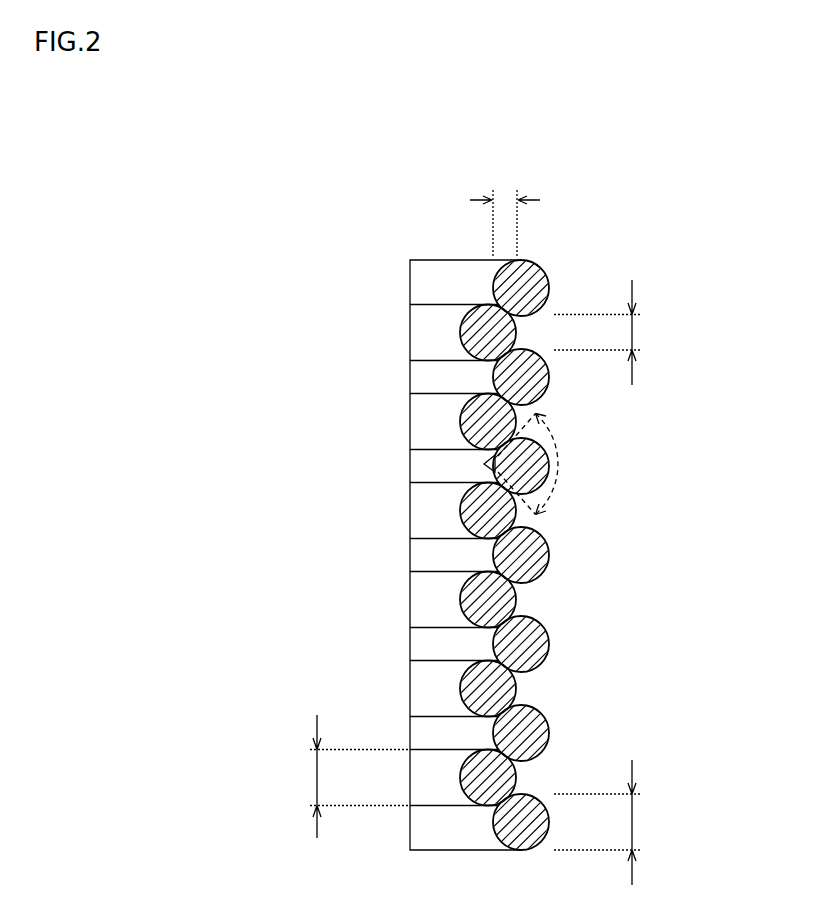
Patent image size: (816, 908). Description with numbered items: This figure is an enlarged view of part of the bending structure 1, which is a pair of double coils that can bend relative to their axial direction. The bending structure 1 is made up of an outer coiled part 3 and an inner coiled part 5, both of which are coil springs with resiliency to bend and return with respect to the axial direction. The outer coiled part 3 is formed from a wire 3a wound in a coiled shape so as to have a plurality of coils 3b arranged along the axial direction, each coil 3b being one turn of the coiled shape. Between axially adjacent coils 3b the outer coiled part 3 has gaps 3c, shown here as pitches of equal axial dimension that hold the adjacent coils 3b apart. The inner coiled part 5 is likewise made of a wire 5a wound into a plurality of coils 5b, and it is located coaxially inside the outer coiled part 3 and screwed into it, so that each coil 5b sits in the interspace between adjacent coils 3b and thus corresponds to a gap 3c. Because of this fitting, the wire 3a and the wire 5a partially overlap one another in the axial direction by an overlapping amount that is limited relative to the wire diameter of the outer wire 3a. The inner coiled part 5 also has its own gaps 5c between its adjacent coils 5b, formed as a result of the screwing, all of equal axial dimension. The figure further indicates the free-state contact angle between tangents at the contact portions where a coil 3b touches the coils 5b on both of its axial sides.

The bending structure 1 is at (611, 236).
The outer coiled part 3 is at (558, 533).
The wire 3a is at (552, 732).
The coil 3b is at (533, 553).
The gap 3c is at (537, 602).
The inner coiled part 5 is at (445, 433).
The wire 5a is at (458, 506).
The coil 5b is at (485, 538).
The gap 5c is at (483, 556).